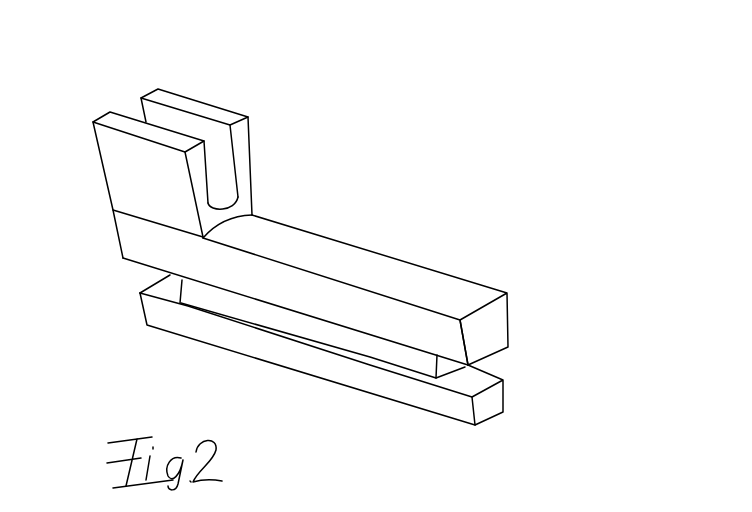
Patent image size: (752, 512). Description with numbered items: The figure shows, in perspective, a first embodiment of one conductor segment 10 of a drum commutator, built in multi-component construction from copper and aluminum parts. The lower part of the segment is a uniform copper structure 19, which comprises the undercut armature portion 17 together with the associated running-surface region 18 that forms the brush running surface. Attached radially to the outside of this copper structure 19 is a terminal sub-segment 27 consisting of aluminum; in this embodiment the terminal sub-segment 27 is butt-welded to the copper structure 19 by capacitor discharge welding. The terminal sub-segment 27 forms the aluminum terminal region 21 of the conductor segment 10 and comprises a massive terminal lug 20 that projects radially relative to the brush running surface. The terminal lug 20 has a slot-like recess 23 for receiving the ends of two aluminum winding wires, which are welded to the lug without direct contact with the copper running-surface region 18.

The conductor segment 10 is at (380, 168).
The armature portion 17 is at (333, 388).
The running-surface region 18 is at (445, 275).
The copper structure 19 is at (385, 332).
The terminal lug 20 is at (245, 189).
The terminal region 21 is at (222, 88).
The slot-like recess 23 is at (128, 102).
The terminal sub-segment 27 is at (106, 192).